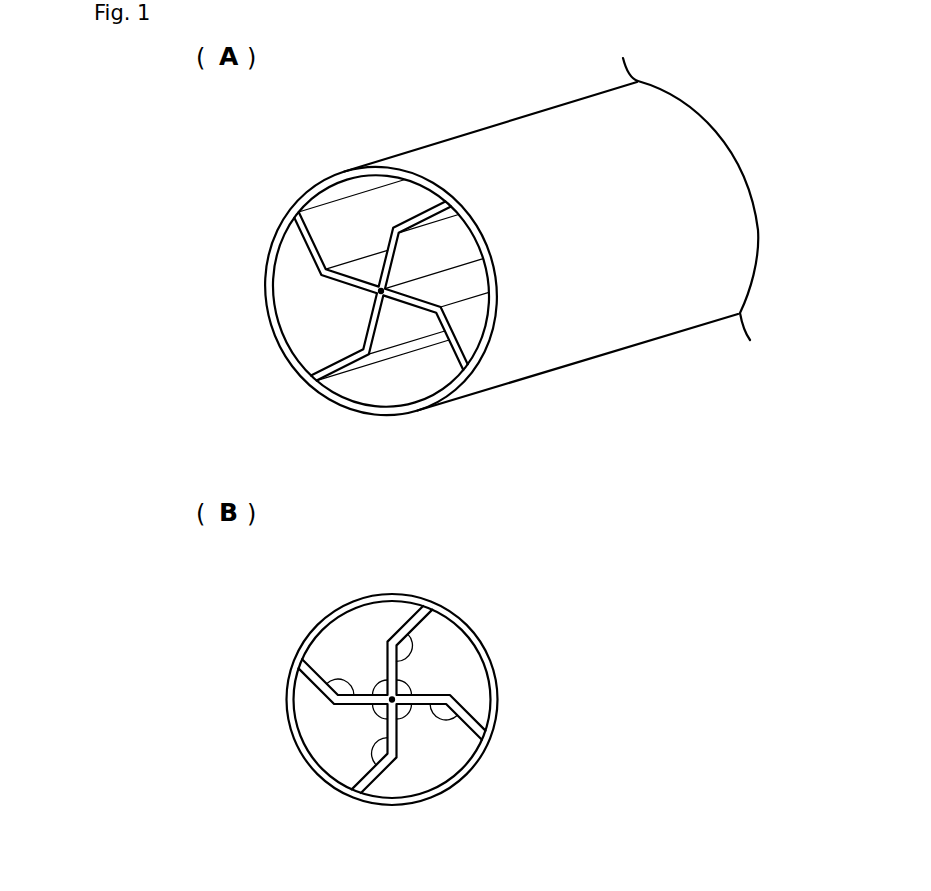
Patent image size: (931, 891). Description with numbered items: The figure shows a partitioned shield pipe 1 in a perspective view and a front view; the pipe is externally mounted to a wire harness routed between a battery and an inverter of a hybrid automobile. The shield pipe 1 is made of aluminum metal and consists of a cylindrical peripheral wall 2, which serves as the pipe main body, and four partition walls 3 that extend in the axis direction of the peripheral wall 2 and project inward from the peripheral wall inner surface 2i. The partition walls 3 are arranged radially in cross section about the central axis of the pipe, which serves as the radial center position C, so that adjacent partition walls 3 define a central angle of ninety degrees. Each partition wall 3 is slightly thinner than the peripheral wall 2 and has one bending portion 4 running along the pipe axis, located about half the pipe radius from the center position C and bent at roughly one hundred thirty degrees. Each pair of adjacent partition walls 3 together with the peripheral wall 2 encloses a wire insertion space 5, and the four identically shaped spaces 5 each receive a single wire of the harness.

The partitioned shield pipe 1 is at (268, 137).
The cylindrical peripheral wall 2 is at (647, 347).
The peripheral wall inner surface 2i is at (447, 384).
The partition wall 3 is at (435, 295).
The bending portion 4 is at (348, 258).
The wire insertion space 5 is at (348, 636).
The radial center position C is at (383, 293).